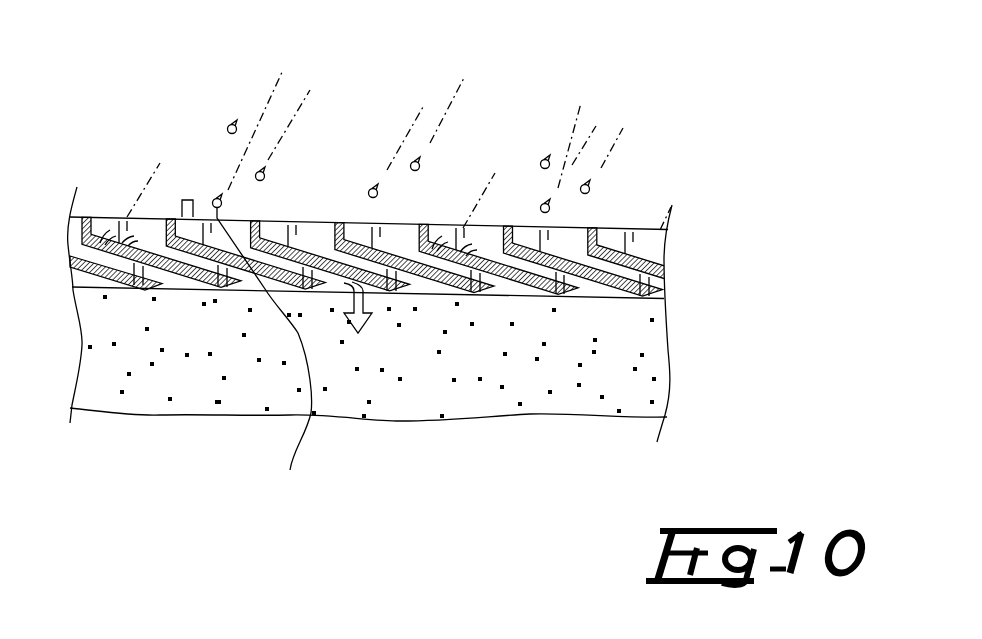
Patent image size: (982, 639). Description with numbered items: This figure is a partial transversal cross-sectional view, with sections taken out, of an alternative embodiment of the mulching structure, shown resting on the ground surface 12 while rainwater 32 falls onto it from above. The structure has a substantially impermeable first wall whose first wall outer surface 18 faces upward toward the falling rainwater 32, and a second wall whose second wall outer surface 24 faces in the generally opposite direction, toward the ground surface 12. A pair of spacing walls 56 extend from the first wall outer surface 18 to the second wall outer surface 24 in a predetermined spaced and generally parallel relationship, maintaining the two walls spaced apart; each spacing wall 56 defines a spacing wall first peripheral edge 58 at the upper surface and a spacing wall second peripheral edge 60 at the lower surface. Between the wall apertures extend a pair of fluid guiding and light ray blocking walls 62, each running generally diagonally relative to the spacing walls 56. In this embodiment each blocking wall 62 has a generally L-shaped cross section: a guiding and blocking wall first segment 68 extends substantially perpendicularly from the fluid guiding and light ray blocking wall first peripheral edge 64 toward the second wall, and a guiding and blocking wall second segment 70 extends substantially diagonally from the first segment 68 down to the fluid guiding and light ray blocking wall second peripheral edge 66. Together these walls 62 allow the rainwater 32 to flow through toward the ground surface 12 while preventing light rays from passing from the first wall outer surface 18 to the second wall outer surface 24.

The first wall outer surface 18 is at (368, 133).
The spacing wall first peripheral edge 58 is at (383, 223).
The fluid guiding and light ray blocking wall first peripheral edge 64 is at (90, 218).
The fluid guiding and light ray blocking wall second peripheral edge 66 is at (224, 262).
The spacing wall 56 is at (280, 233).
The guiding and blocking wall first segment 68 is at (329, 238).
The guiding and blocking wall second segment 70 is at (622, 295).
The fluid guiding and light ray blocking wall 62 is at (571, 259).
The rainwater 32 is at (262, 348).
The spacing wall second peripheral edge 60 is at (433, 296).
The ground surface 12 is at (650, 366).
The second wall outer surface 24 is at (488, 330).